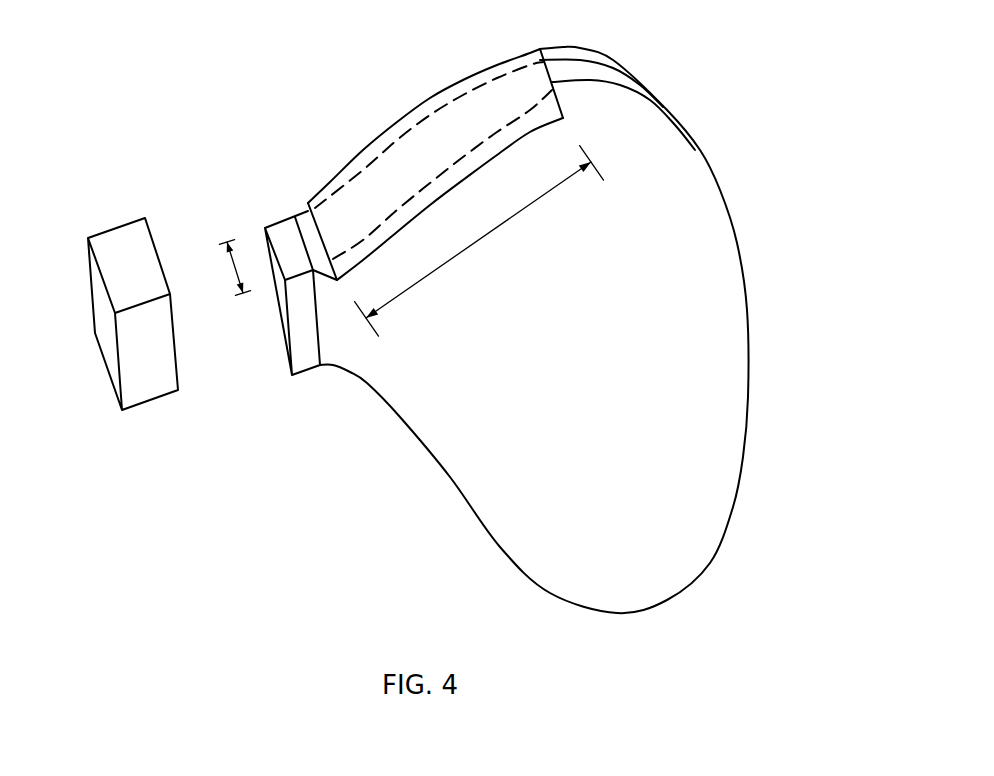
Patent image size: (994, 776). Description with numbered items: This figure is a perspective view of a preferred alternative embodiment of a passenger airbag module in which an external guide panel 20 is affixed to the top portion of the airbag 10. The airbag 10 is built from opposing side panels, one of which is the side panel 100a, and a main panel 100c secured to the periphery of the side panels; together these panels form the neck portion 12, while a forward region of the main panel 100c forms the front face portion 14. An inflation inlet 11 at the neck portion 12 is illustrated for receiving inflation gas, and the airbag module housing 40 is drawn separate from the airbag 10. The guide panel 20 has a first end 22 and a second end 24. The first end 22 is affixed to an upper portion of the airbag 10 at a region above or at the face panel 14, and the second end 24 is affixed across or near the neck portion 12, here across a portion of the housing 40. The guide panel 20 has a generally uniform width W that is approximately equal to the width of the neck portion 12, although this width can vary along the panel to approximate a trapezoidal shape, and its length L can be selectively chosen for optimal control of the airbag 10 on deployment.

The airbag 10 is at (516, 314).
The inflation inlet 11 is at (280, 303).
The neck portion 12 is at (277, 231).
The front face portion 14 is at (744, 456).
The external guide panel 20 is at (427, 153).
The first end 22 is at (552, 73).
The second end 24 is at (312, 220).
The housing 40 is at (122, 242).
The side panel 100a is at (708, 283).
The main panel 100c is at (595, 73).
The length dimension L is at (433, 278).
The width dimension W is at (234, 268).